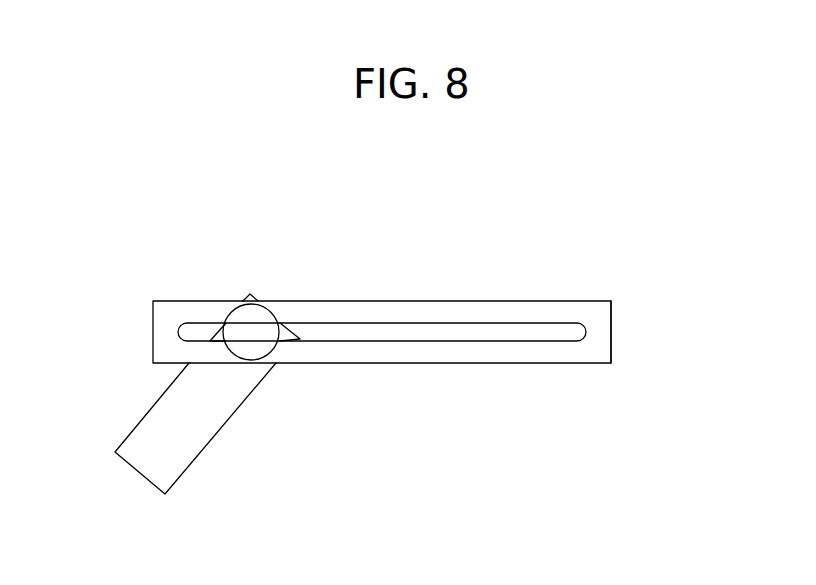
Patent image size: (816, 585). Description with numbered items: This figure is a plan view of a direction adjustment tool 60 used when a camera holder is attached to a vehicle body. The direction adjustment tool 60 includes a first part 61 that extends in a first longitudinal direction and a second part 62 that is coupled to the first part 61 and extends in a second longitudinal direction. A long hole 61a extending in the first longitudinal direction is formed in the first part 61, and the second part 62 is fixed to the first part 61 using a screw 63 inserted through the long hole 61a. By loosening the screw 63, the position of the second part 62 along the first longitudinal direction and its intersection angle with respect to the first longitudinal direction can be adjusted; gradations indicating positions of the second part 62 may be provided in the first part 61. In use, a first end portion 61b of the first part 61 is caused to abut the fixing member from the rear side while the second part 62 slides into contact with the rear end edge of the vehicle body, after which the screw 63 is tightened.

The direction adjustment tool 60 is at (487, 275).
The first part 61 is at (385, 310).
The long hole 61a is at (460, 339).
The first end portion 61b is at (612, 334).
The second part 62 is at (152, 430).
The screw 63 is at (258, 316).